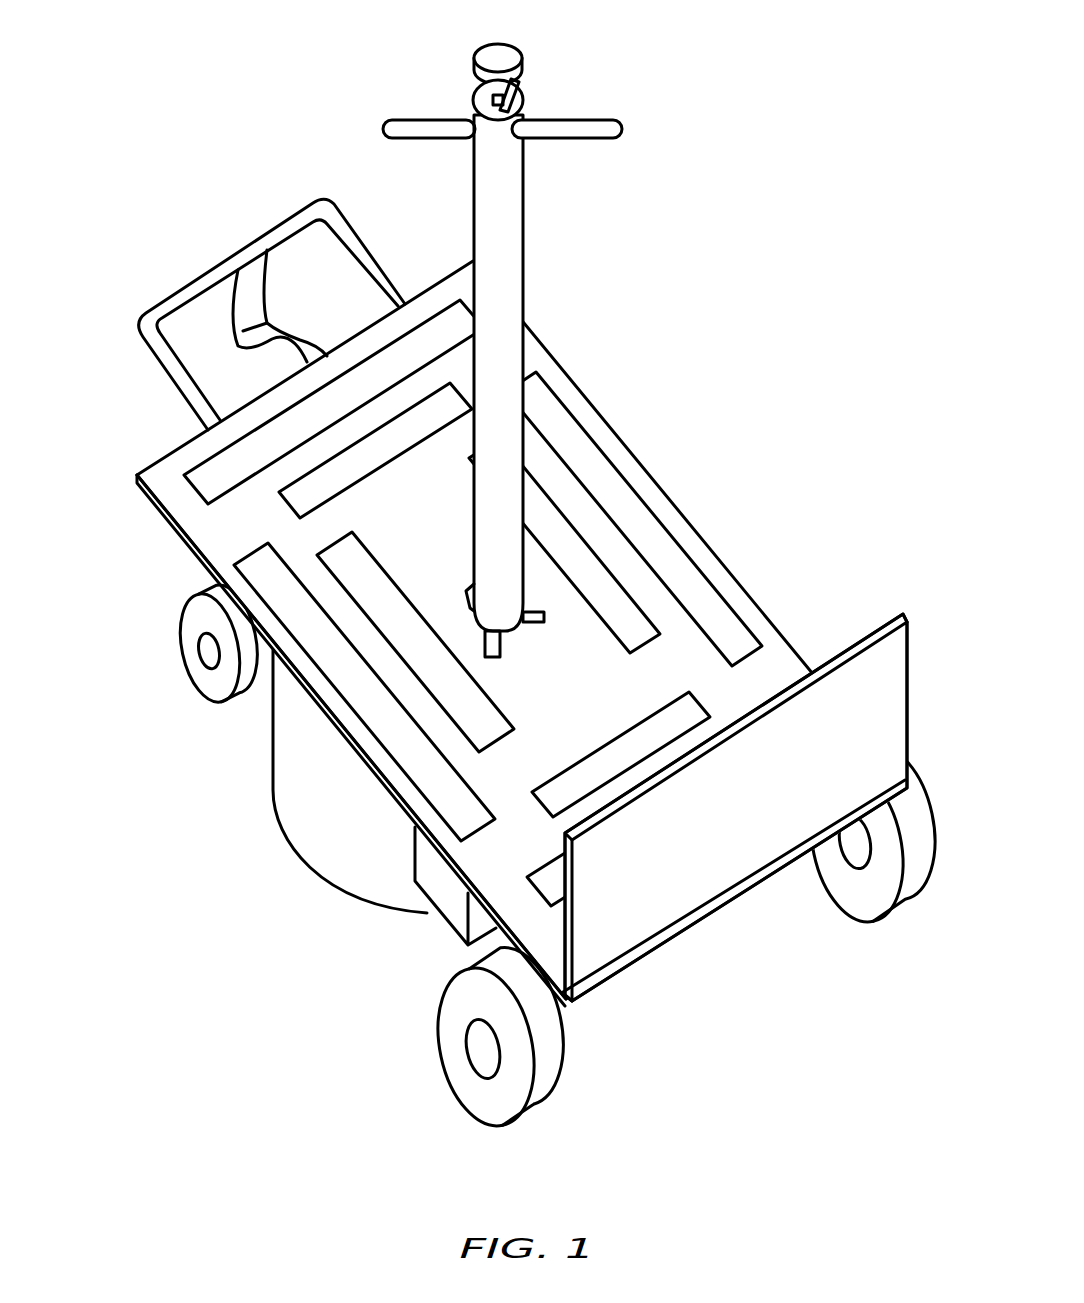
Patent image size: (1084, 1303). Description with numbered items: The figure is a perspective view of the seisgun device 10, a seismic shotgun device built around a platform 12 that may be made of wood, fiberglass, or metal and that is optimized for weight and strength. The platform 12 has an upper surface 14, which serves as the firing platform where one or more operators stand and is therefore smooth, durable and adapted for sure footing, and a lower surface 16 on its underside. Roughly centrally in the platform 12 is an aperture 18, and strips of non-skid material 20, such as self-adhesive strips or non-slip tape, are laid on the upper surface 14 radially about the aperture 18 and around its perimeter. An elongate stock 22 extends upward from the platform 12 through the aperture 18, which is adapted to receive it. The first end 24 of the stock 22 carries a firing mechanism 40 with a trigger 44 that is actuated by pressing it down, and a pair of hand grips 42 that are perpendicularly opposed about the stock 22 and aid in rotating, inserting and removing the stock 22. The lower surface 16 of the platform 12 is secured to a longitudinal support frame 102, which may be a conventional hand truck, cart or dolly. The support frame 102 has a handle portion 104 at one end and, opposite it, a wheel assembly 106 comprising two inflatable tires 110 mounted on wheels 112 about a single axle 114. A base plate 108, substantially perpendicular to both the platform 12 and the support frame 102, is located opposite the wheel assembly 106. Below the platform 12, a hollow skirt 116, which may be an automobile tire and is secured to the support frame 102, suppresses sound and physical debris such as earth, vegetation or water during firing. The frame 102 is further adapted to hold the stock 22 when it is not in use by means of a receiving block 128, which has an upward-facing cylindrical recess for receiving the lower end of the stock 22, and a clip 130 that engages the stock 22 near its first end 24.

The seisgun device 10 is at (282, 961).
The platform 12 is at (800, 646).
The upper surface 14 is at (214, 538).
The lower surface 16 is at (190, 573).
The aperture 18 is at (618, 783).
The non-skid material 20 is at (636, 440).
The elongate stock 22 is at (503, 340).
The first end 24 is at (524, 101).
The firing mechanism 40 is at (455, 77).
The hand grip 42 is at (385, 129).
The trigger 44 is at (522, 68).
The longitudinal support frame 102 is at (168, 303).
The handle portion 104 is at (267, 330).
The wheel assembly 106 is at (745, 973).
The base plate 108 is at (706, 815).
The inflatable tires 110 is at (548, 1070).
The wheels 112 is at (477, 1043).
The single axle 114 is at (750, 910).
The skirt 116 is at (298, 796).
The receiving block 128 is at (455, 904).
The clip 130 is at (205, 612).